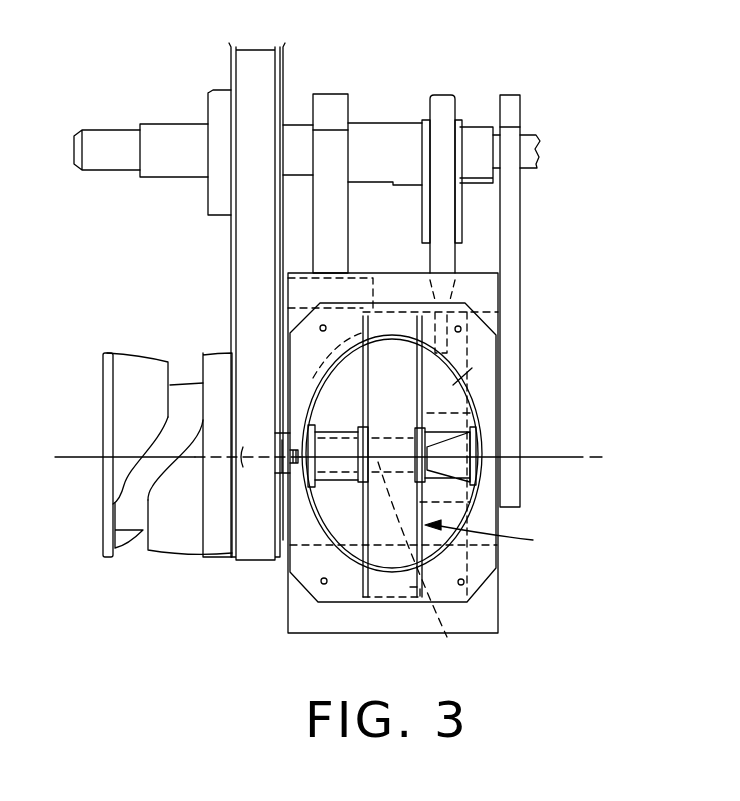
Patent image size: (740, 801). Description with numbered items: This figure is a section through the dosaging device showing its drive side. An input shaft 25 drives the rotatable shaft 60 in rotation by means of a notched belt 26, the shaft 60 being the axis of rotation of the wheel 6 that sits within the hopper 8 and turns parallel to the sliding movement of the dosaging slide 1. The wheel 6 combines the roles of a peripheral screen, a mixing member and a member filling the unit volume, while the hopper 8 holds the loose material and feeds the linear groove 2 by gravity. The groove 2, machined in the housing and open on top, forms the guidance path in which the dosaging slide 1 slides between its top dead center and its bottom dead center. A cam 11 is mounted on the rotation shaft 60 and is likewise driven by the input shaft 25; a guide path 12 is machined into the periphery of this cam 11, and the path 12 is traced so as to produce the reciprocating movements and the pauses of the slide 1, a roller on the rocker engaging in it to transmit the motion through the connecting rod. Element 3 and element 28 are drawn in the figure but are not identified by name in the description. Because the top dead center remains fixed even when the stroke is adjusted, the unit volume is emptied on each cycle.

The dosaging slide 1 is at (333, 465).
The linear groove 2 is at (418, 565).
The housing frame 3 is at (467, 365).
The wheel 6 is at (489, 539).
The hopper 8 is at (481, 410).
The cam 11 is at (115, 395).
The guide path 12 is at (122, 502).
The input shaft 25 is at (112, 138).
The notched belt 26 is at (242, 283).
The second pulley 28 is at (447, 108).
The axis of rotation / rotatable shaft 60 is at (580, 457).